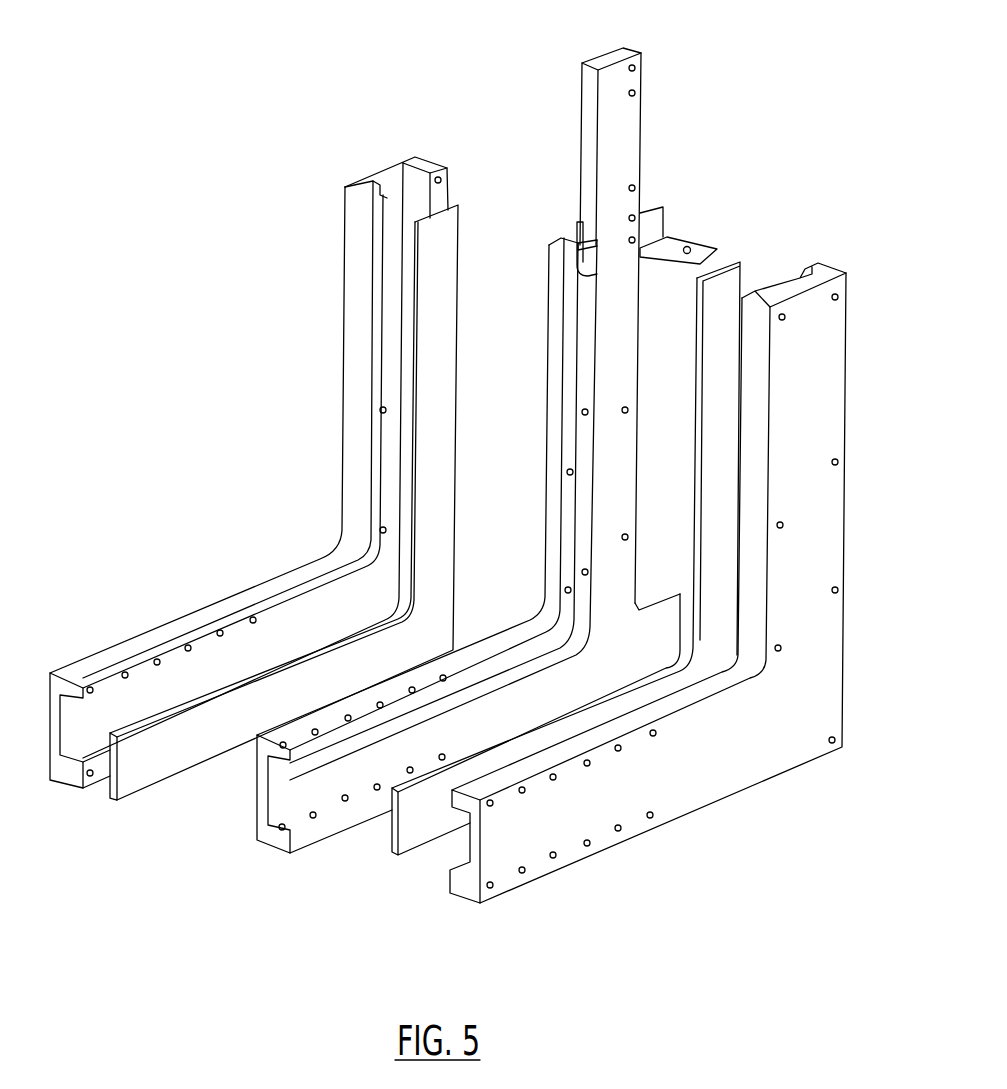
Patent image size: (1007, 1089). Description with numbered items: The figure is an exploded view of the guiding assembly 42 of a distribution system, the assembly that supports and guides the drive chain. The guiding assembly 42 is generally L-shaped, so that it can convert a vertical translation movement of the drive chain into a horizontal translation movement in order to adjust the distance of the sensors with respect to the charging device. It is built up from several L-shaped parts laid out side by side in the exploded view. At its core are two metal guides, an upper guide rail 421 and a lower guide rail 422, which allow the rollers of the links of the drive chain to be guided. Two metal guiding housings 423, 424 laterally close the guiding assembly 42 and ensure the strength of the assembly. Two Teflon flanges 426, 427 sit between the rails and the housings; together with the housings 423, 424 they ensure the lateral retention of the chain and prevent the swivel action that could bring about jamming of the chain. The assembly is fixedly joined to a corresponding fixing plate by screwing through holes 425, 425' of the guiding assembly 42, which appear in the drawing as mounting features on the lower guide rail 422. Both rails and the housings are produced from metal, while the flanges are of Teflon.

The guiding assembly 42 is at (240, 535).
The upper guide rail 421 is at (257, 740).
The lower guide rail 422 is at (623, 142).
The metal guiding housing 423 is at (212, 620).
The metal guiding housing 424 is at (732, 770).
The hole 425 is at (710, 209).
The hole 425' is at (552, 220).
The Teflon flange 426 is at (440, 316).
The Teflon flange 427 is at (723, 288).